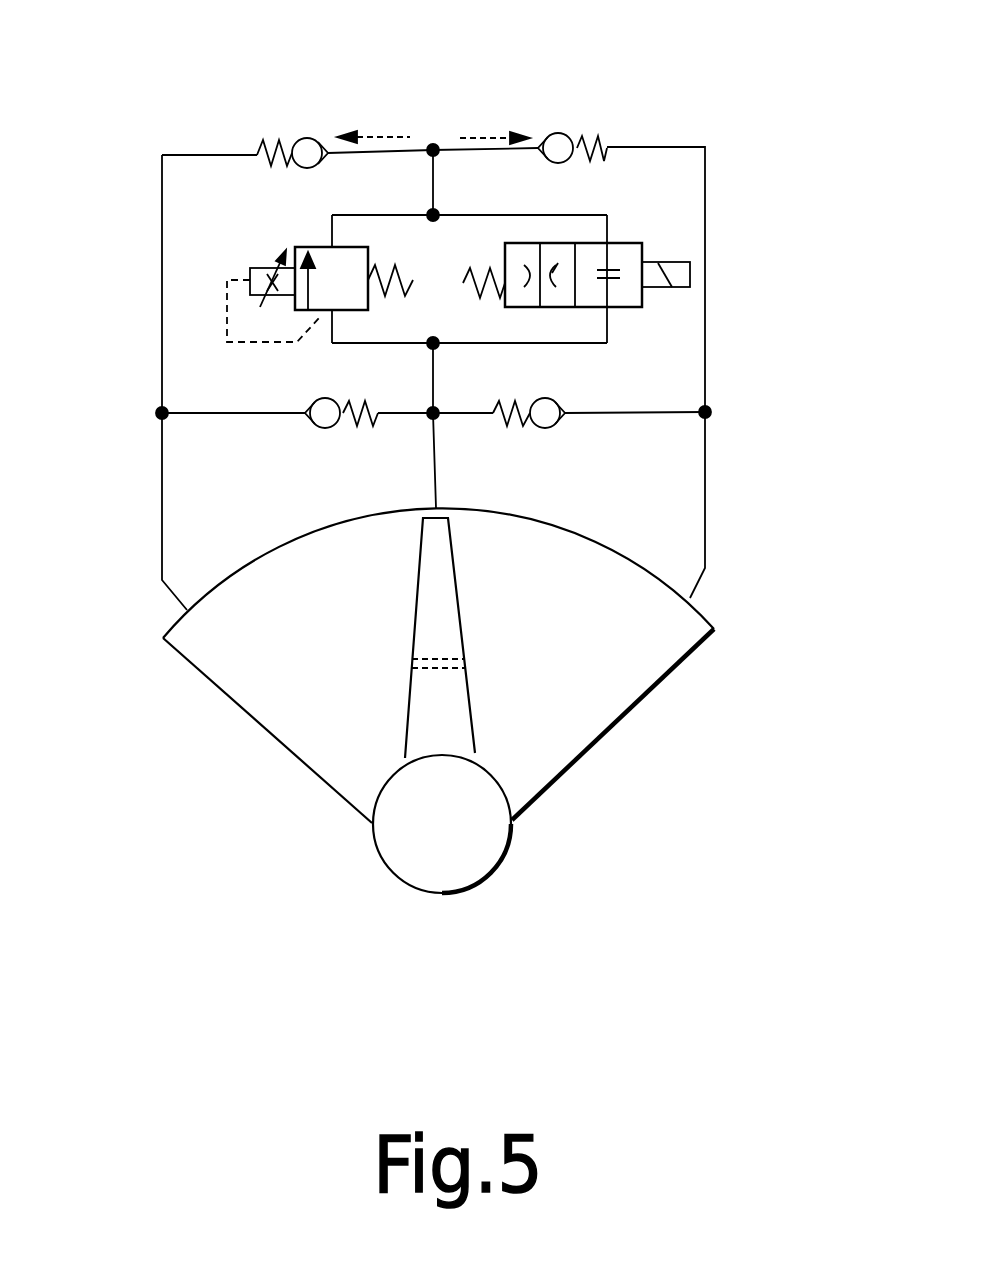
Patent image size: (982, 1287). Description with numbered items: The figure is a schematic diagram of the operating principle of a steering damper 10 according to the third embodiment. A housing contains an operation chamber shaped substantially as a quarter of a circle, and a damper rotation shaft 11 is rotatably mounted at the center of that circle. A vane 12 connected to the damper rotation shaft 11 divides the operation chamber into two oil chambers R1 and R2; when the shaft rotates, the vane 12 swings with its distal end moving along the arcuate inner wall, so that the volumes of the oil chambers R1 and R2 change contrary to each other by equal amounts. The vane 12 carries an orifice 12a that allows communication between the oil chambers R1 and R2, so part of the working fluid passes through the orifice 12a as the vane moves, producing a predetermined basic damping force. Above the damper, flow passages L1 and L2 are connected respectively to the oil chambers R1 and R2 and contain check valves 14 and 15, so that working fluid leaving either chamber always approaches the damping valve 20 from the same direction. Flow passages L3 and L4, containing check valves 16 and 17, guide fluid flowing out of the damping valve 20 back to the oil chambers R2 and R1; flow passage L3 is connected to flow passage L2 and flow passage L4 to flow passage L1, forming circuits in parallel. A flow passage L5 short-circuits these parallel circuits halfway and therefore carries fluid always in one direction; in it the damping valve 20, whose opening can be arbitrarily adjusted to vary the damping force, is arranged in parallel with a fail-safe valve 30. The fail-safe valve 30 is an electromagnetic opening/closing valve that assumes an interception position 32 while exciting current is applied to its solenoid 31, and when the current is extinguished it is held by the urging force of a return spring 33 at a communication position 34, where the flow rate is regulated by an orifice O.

The steering damper 10 is at (222, 713).
The damper rotation shaft 11 is at (510, 850).
The vane 12 is at (403, 687).
The orifice 12a is at (438, 657).
The check valve 14 is at (305, 430).
The check valve 15 is at (563, 427).
The check valve 16 is at (573, 134).
The check valve 17 is at (292, 138).
The damping valve 20 is at (227, 258).
The fail-safe valve 30 is at (667, 223).
The solenoid 31 is at (682, 288).
The interception position 32 is at (645, 248).
The return spring 33 is at (488, 300).
The communication position 34 is at (465, 179).
The flow passage L1 is at (163, 543).
The flow passage L2 is at (706, 533).
The flow passage L3 is at (688, 147).
The flow passage L4 is at (162, 182).
The flow passage L5 is at (433, 372).
The orifice O is at (558, 263).
The oil chamber R1 is at (342, 668).
The oil chamber R2 is at (582, 664).